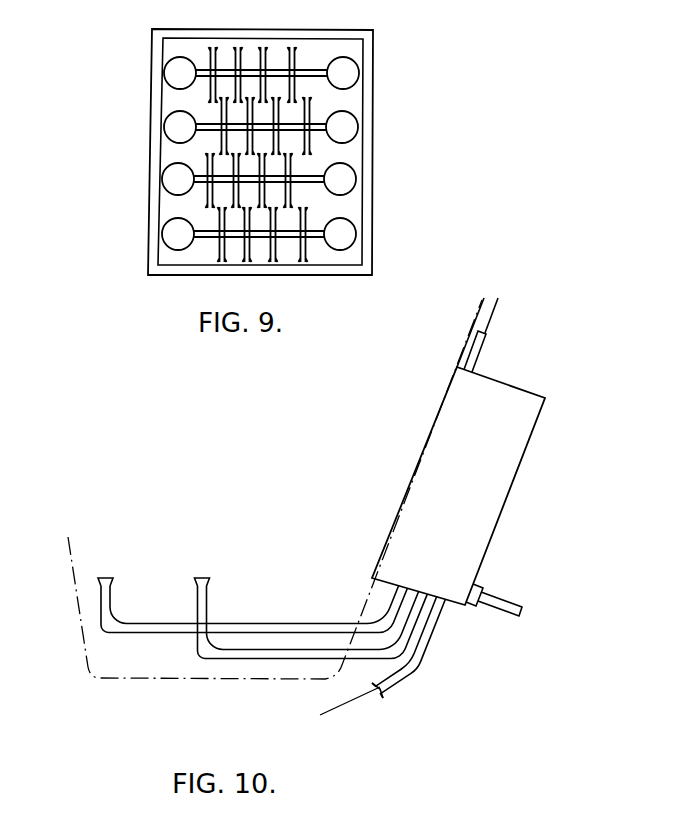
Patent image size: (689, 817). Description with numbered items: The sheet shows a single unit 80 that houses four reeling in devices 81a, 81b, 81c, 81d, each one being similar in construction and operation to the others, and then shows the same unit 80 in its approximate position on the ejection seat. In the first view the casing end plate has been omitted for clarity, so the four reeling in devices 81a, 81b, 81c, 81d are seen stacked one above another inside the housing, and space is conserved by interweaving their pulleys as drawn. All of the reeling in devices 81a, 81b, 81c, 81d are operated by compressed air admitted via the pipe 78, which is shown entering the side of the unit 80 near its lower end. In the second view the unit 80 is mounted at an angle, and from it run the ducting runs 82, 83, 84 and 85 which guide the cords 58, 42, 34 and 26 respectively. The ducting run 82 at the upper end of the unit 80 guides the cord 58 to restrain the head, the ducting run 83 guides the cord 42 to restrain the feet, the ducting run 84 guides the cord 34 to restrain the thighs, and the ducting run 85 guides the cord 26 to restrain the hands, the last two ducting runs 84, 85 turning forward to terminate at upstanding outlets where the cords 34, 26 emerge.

In FIG. 9, the single unit 80 is at (368, 155).
In FIG. 10, the single unit 80 is at (512, 484).
In FIG. 9, the reeling in device 81a is at (177, 70).
In FIG. 9, the reeling in device 81b is at (178, 123).
In FIG. 9, the reeling in device 81c is at (173, 176).
In FIG. 9, the reeling in device 81d is at (172, 235).
In FIG. 10, the cord 58 is at (488, 321).
In FIG. 10, the ducting run 82 is at (477, 357).
In FIG. 10, the pipe 78 is at (497, 597).
In FIG. 10, the ducting run 83 is at (423, 658).
In FIG. 10, the ducting run 84 is at (256, 659).
In FIG. 10, the ducting run 85 is at (142, 633).
In FIG. 10, the cord 26 is at (105, 578).
In FIG. 10, the cord 34 is at (202, 578).
In FIG. 10, the cord 42 is at (355, 699).